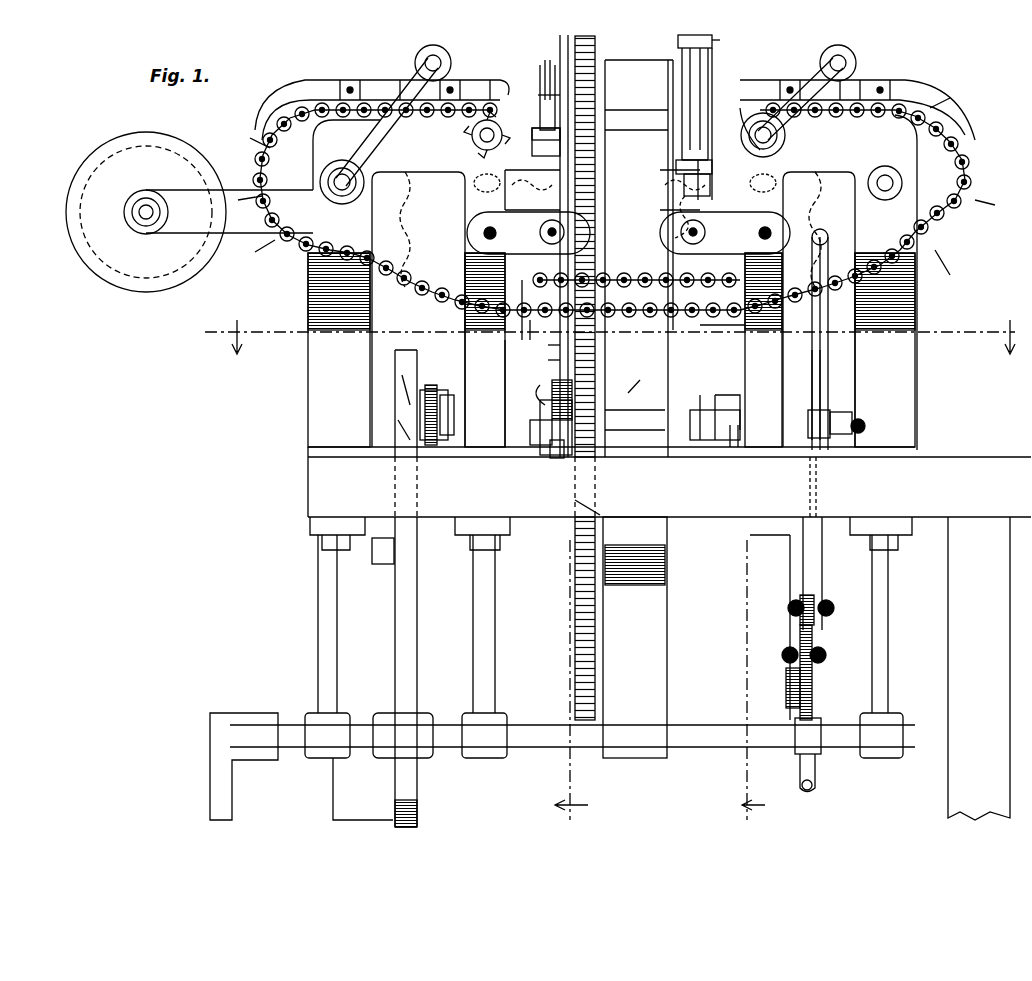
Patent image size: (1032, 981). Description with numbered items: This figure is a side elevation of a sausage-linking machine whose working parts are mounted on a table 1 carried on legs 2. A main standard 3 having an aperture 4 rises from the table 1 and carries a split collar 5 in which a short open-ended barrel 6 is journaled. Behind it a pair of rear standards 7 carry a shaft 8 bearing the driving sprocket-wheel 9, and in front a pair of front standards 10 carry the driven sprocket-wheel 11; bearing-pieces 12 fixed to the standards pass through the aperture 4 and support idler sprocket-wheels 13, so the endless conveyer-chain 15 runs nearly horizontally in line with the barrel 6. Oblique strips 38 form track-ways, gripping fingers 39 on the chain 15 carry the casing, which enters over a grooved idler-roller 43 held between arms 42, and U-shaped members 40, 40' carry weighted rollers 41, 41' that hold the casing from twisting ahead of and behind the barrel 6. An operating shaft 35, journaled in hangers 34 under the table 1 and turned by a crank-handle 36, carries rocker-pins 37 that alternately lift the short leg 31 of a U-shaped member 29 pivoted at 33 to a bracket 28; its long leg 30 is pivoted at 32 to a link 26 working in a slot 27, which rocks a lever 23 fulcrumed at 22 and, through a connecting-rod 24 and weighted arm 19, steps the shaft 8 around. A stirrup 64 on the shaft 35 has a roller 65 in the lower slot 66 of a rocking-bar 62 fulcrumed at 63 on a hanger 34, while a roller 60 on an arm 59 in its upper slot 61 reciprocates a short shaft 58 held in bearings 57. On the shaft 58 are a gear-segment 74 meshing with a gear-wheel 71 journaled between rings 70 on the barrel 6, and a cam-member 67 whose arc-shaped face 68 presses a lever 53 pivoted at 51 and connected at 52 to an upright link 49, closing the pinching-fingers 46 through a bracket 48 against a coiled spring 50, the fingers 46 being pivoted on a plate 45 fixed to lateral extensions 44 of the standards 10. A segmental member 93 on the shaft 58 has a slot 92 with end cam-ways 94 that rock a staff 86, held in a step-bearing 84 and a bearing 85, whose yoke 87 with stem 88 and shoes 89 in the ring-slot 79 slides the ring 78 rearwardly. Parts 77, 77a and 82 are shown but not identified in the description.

The table 1 is at (669, 482).
The legs 2 is at (671, 668).
The main standard 3 is at (635, 559).
The aperture 4 is at (645, 385).
The split collar 5 is at (707, 425).
The barrel 6 is at (573, 424).
The rear standards 7 is at (830, 350).
The shaft 8 is at (885, 176).
The driving sprocket-wheel 9 is at (819, 309).
The front standards 10 is at (406, 350).
The driven sprocket-wheel 11 is at (600, 163).
The bearing-pieces 12 is at (628, 233).
The idler sprocket-wheels 13 is at (609, 192).
The conveyer-chain 15 is at (448, 300).
The weighted arm 19 is at (835, 225).
The fulcrum 22 is at (866, 424).
The lever 23 is at (812, 410).
The connecting-rod 24 is at (805, 393).
The second link 26 is at (822, 572).
The slot 27 is at (818, 492).
The bracket 28 is at (790, 578).
The U-shaped member 29 is at (812, 680).
The long leg 30 is at (800, 615).
The short leg 31 is at (790, 712).
The pivot 32 is at (790, 607).
The pivot 33 is at (826, 655).
The hangers 34 is at (318, 625).
The operating shaft 35 is at (290, 745).
The crank-handle 36 is at (215, 790).
The rocker-pins 37 is at (815, 718).
The strips 38 is at (390, 88).
The gripping fingers 39 is at (945, 250).
The U-shaped member 40 is at (374, 161).
The U-shaped member 40' is at (829, 247).
The roller 41 is at (411, 110).
The roller 41' is at (827, 87).
The arms 42 is at (229, 211).
The idler-roller 43 is at (146, 212).
The lateral extensions 44 is at (538, 112).
The plate 45 is at (538, 100).
The pinching-fingers 46 is at (540, 75).
The bracket 48 is at (535, 148).
The upright link 49 is at (531, 310).
The coiled spring 50 is at (568, 460).
The pivot 51 is at (528, 419).
The pivot 52 is at (556, 365).
The lever 53 is at (540, 362).
The bearings 57 is at (552, 460).
The short shaft 58 is at (552, 450).
The lateral arm 59 is at (445, 440).
The roller 60 is at (390, 383).
The slot 61 is at (390, 427).
The rocking-bar 62 is at (418, 368).
The fulcrum 63 is at (375, 564).
The stirrup 64 is at (420, 762).
The roller 65 is at (448, 695).
The slot 66 is at (451, 718).
The cam-member 67 is at (530, 387).
The arc-shaped face 68 is at (505, 375).
The rings 70 is at (605, 100).
The gear-wheel 71 is at (605, 148).
The gear-segment 74 is at (598, 628).
The rod 77 is at (668, 65).
The rod 77a is at (600, 500).
The ring 78 is at (710, 95).
The ring-slot 79 is at (715, 90).
The cap 82 is at (720, 50).
The step-bearing 84 is at (685, 455).
The bearing 85 is at (684, 200).
The staff 86 is at (705, 340).
The yoke 87 is at (690, 40).
The stem 88 is at (746, 116).
The shoes 89 is at (668, 108).
The slot 92 is at (728, 445).
The segmental member 93 is at (740, 445).
The cam-ways 94 is at (720, 403).